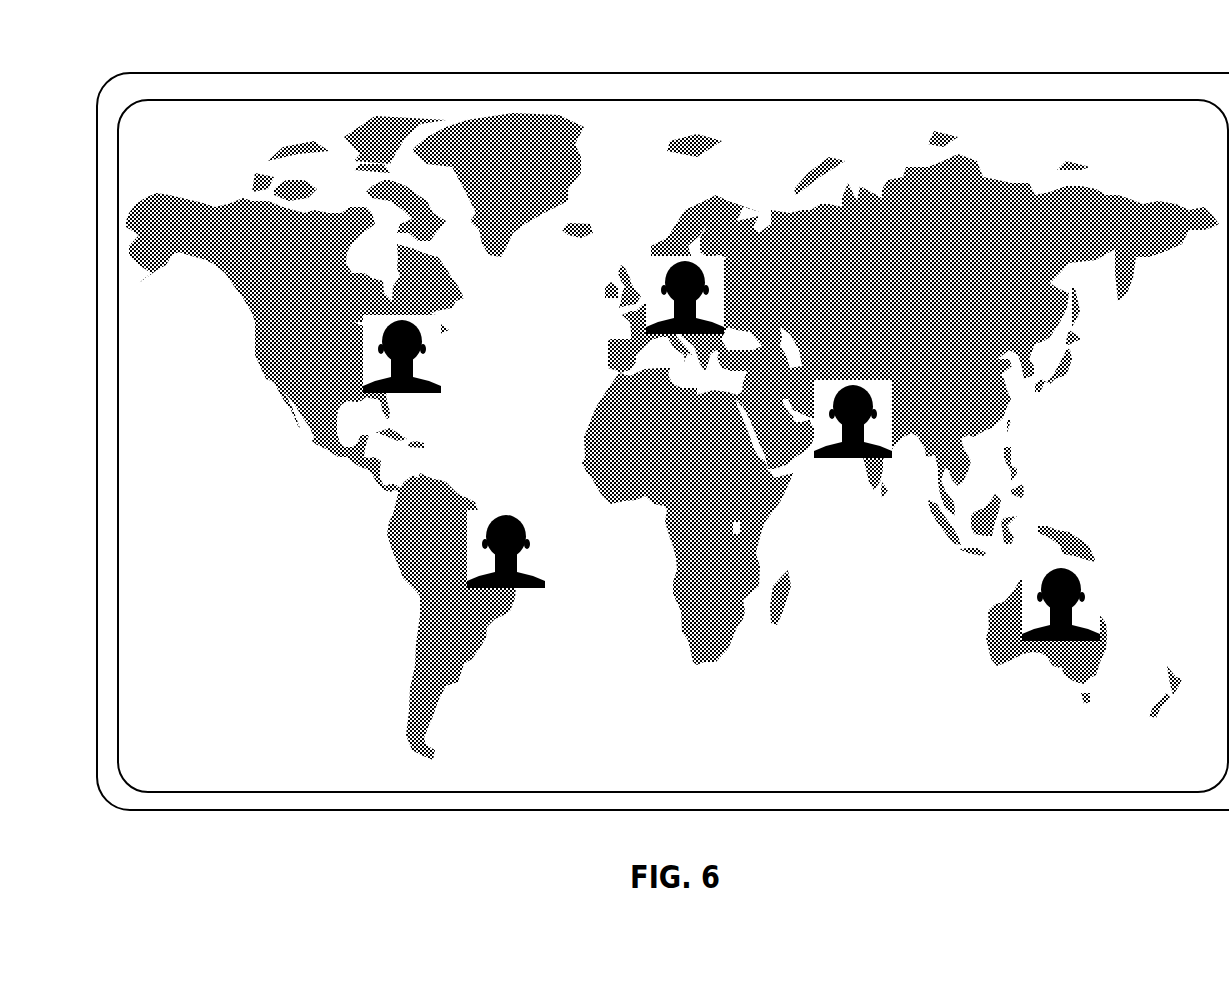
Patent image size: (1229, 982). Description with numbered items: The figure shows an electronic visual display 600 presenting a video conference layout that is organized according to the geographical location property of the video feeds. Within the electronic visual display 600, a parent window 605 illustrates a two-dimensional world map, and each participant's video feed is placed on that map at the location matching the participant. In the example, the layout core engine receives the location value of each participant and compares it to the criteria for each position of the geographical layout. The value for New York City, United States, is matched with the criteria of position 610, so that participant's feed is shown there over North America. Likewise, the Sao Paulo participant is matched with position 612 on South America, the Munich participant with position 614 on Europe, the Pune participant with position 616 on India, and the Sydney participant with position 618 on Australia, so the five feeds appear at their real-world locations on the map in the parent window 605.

The electronic visual display 600 is at (203, 797).
The parent window 605 is at (163, 127).
The position 610 is at (363, 347).
The position 612 is at (470, 545).
The position 614 is at (686, 257).
The position 616 is at (853, 455).
The position 618 is at (1032, 633).